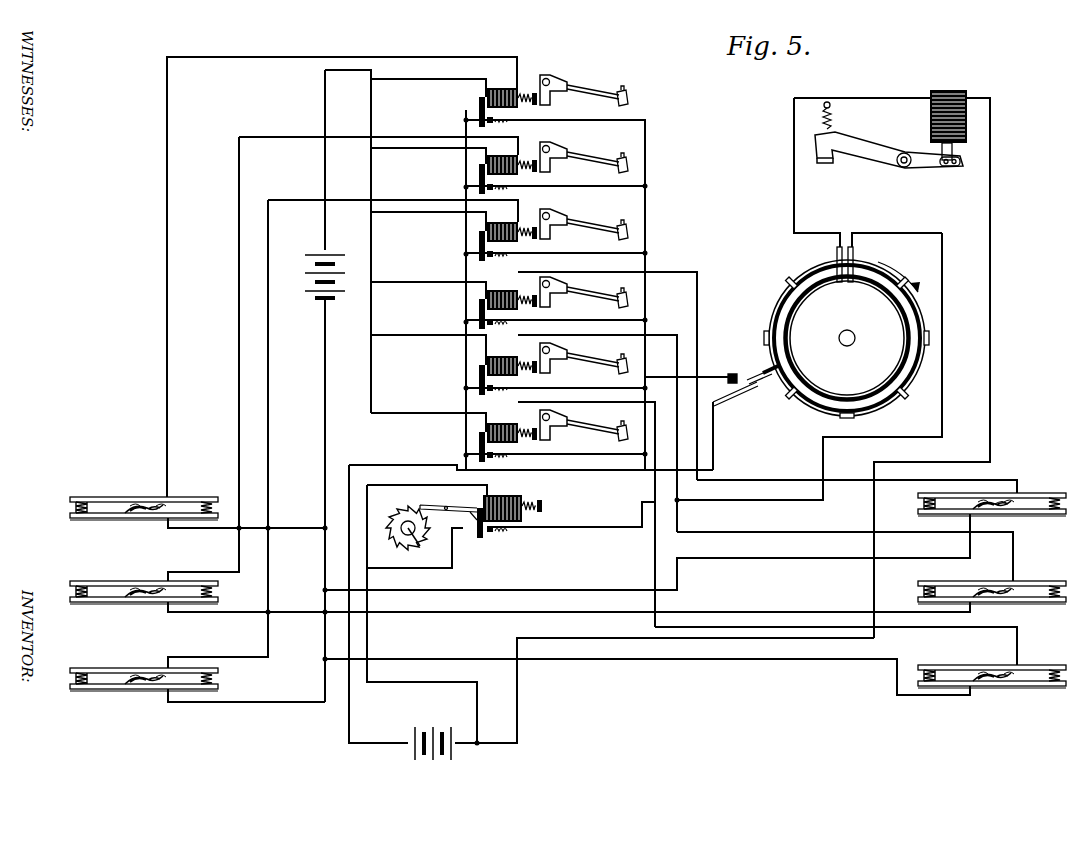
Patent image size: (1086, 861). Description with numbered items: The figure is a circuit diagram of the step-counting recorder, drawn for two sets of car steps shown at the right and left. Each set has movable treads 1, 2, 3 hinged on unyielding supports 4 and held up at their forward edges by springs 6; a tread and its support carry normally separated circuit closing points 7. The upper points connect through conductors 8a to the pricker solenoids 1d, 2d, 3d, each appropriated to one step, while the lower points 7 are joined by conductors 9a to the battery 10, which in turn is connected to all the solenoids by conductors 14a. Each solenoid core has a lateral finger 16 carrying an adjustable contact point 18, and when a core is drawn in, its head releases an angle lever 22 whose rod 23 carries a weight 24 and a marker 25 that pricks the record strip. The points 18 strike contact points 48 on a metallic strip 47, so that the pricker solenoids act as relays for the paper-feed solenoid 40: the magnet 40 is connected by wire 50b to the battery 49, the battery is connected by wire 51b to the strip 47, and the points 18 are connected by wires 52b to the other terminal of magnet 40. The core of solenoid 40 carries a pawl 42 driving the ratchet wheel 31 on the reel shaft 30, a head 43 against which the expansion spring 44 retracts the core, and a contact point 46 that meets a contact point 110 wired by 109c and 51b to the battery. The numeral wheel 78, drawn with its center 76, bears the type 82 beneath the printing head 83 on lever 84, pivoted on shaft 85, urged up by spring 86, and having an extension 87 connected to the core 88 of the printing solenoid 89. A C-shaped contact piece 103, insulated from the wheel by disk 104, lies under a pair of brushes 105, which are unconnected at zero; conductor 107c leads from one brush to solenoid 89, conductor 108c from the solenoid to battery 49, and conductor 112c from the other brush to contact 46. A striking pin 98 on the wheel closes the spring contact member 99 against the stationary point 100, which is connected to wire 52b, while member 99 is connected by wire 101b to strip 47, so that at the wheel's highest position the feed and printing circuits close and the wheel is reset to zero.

The movable tread 1 is at (114, 497).
The movable tread 2 is at (110, 581).
The movable tread 3 is at (112, 668).
The support 4 is at (95, 519).
The spring 6 is at (74, 505).
The circuit closing point 7 is at (143, 580).
The conductor 8a is at (165, 420).
The conductor 9a is at (324, 455).
The battery 10 is at (315, 292).
The conductor 14a is at (408, 75).
The lateral finger 16 is at (478, 105).
The contact point 18 is at (495, 457).
The solenoid 1d is at (497, 88).
The solenoid 2d is at (528, 158).
The solenoid 3d is at (528, 225).
The angle lever 22 is at (552, 75).
The rod 23 is at (592, 85).
The weight 24 is at (628, 96).
The marker 25 is at (623, 86).
The reel shaft 30 is at (414, 535).
The ratchet wheel 31 is at (398, 542).
The paper-feed solenoid 40 is at (512, 523).
The pawl 42 is at (430, 506).
The head 43 is at (545, 508).
The expansion spring 44 is at (528, 515).
The contact point 46 is at (478, 516).
The metallic strip 47 is at (464, 302).
The contact point 48 is at (466, 183).
The battery 49 is at (455, 750).
The wire 50b is at (420, 484).
The wire 51b is at (350, 464).
The wire 52b is at (646, 140).
The shaft 76 is at (847, 346).
The numeral wheel 78 is at (888, 402).
The type 82 is at (930, 342).
The printing head 83 is at (822, 163).
The lever 84 is at (870, 162).
The shaft 85 is at (904, 168).
The spring 86 is at (832, 115).
The extension 87 is at (936, 170).
The core 88 is at (953, 152).
The printing solenoid 89 is at (968, 112).
The striking pin 98 is at (750, 374).
The spring contact member 99 is at (740, 394).
The stationary contact point 100 is at (732, 374).
The wire 101b is at (715, 438).
The contact piece 103 is at (793, 300).
The disk 104 is at (782, 300).
The brush 105 is at (836, 252).
The conductor 107c is at (793, 170).
The conductor 108c is at (992, 205).
The wire 109c is at (454, 568).
The contact point 110 is at (469, 528).
The conductor 112c is at (595, 527).